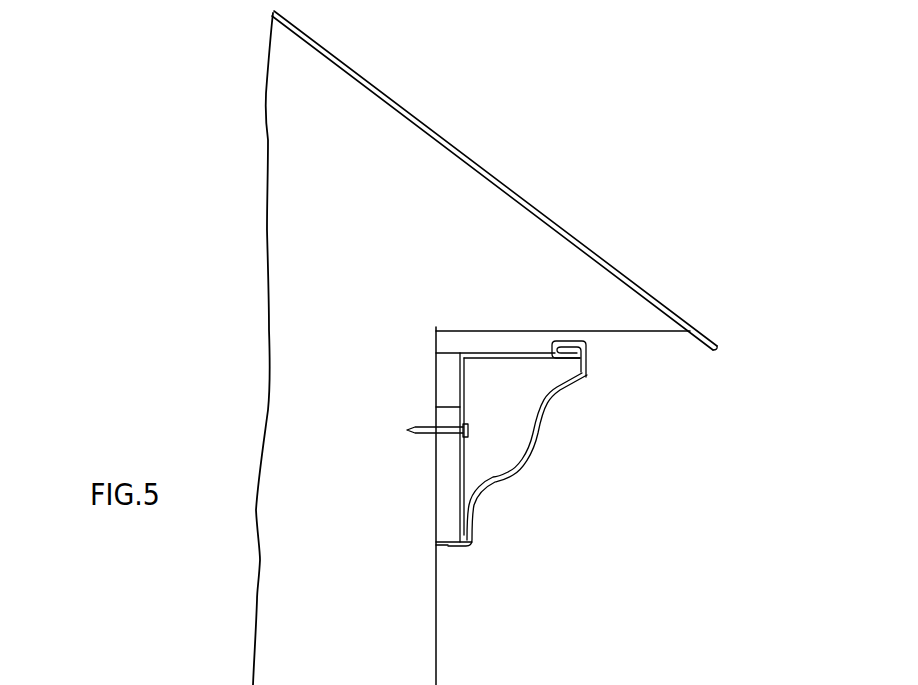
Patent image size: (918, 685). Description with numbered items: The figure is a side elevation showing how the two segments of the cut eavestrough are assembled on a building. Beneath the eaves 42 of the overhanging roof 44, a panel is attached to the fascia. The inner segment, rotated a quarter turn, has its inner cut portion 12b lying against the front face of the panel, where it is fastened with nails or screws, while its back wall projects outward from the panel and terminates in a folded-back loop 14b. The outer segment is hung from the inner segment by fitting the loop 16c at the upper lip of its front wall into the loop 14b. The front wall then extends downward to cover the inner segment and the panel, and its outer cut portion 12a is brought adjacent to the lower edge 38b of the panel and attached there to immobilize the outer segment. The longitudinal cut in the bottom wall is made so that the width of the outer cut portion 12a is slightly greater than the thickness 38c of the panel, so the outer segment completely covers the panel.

The overhanging roof 44 is at (503, 186).
The eaves 42 is at (637, 333).
The inner cut portion 12b is at (436, 407).
The outer cut portion 12a is at (457, 546).
The lower edge of the panel 38b is at (447, 546).
The thickness of the panel 38c is at (497, 475).
The loop 16c is at (567, 341).
The loop 14b is at (557, 355).